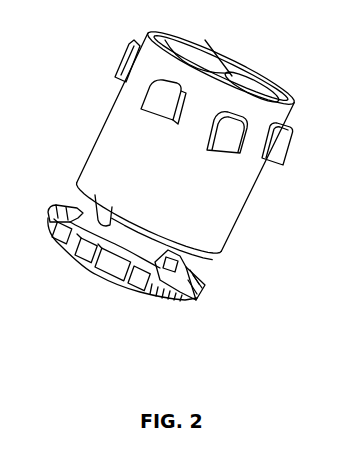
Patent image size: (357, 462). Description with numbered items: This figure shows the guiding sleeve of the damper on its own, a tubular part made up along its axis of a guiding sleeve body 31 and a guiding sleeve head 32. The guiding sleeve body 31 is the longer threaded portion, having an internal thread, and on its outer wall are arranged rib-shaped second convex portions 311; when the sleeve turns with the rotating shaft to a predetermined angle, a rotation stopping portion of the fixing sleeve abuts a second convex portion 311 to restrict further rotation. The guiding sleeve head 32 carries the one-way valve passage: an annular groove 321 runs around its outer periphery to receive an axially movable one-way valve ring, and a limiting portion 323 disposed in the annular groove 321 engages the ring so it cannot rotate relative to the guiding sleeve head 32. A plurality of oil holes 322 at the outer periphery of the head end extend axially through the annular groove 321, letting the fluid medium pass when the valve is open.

The guiding sleeve body 31 is at (223, 180).
The second convex portion 311 is at (158, 102).
The guiding sleeve head 32 is at (207, 287).
The annular groove 321 is at (83, 213).
The oil hole 322 is at (104, 256).
The limiting portion 323 is at (202, 295).